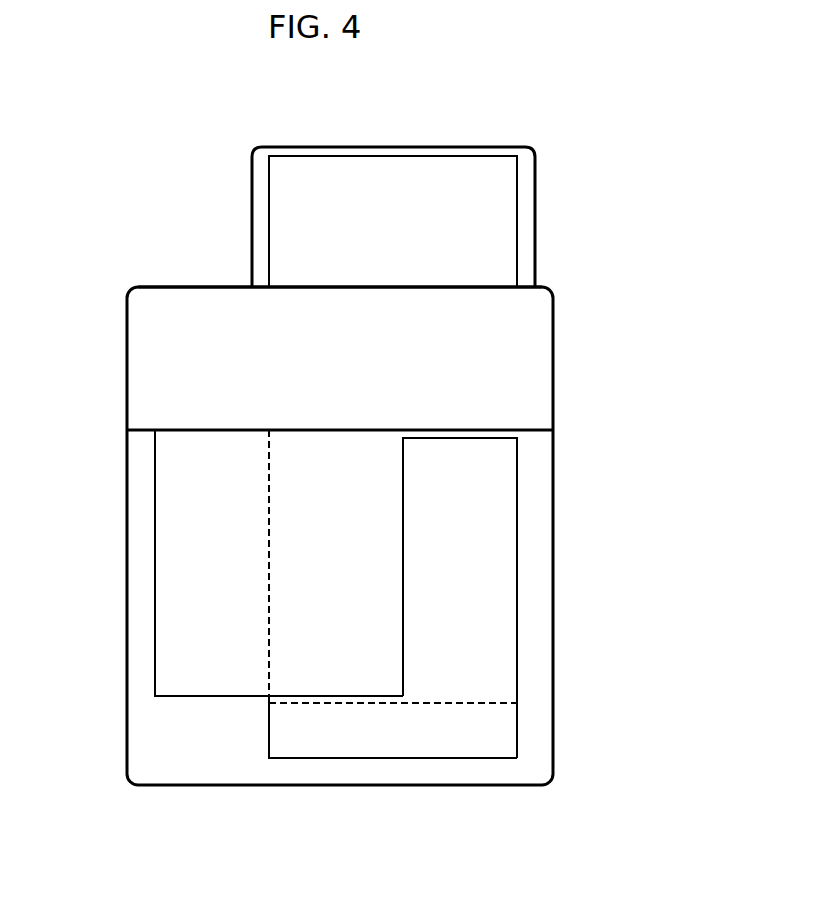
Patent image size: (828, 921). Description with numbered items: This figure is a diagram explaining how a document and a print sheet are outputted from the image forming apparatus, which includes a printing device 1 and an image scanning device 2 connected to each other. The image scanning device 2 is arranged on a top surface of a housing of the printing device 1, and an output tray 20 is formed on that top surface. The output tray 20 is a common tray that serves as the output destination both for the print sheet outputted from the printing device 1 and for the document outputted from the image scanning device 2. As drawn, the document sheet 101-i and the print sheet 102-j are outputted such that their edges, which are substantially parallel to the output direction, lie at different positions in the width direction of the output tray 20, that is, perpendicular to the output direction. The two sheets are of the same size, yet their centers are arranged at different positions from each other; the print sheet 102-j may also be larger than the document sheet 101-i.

The printing device 1 is at (135, 545).
The image scanning device 2 is at (535, 368).
The output tray 20 is at (203, 719).
The document sheet 101-i is at (500, 653).
The print sheet 102-j is at (180, 583).